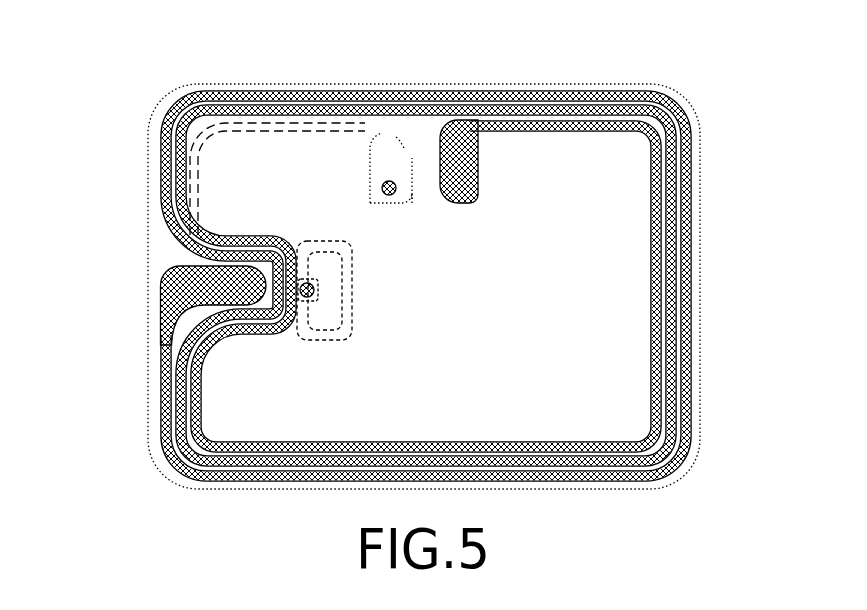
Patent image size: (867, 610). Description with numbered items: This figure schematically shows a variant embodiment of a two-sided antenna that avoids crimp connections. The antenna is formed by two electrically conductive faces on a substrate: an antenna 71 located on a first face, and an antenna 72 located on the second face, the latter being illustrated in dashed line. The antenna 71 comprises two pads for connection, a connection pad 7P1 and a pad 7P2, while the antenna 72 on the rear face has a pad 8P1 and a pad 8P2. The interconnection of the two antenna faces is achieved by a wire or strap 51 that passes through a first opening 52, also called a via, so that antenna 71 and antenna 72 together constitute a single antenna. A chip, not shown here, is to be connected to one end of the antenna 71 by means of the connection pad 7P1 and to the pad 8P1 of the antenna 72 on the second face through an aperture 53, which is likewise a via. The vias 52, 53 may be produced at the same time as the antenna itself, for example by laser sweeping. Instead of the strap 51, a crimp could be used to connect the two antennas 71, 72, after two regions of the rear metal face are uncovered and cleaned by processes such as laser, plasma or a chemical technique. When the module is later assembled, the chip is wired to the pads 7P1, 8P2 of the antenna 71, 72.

The antenna 71 is at (665, 103).
The antenna 72 is at (233, 122).
The connection pad 7P1 is at (481, 206).
The pad 7P2 is at (205, 280).
The pad 8P1 is at (383, 162).
The pad 8P2 is at (328, 280).
The strap 51 is at (305, 300).
The first opening 52 is at (326, 318).
The aperture 53 is at (390, 181).